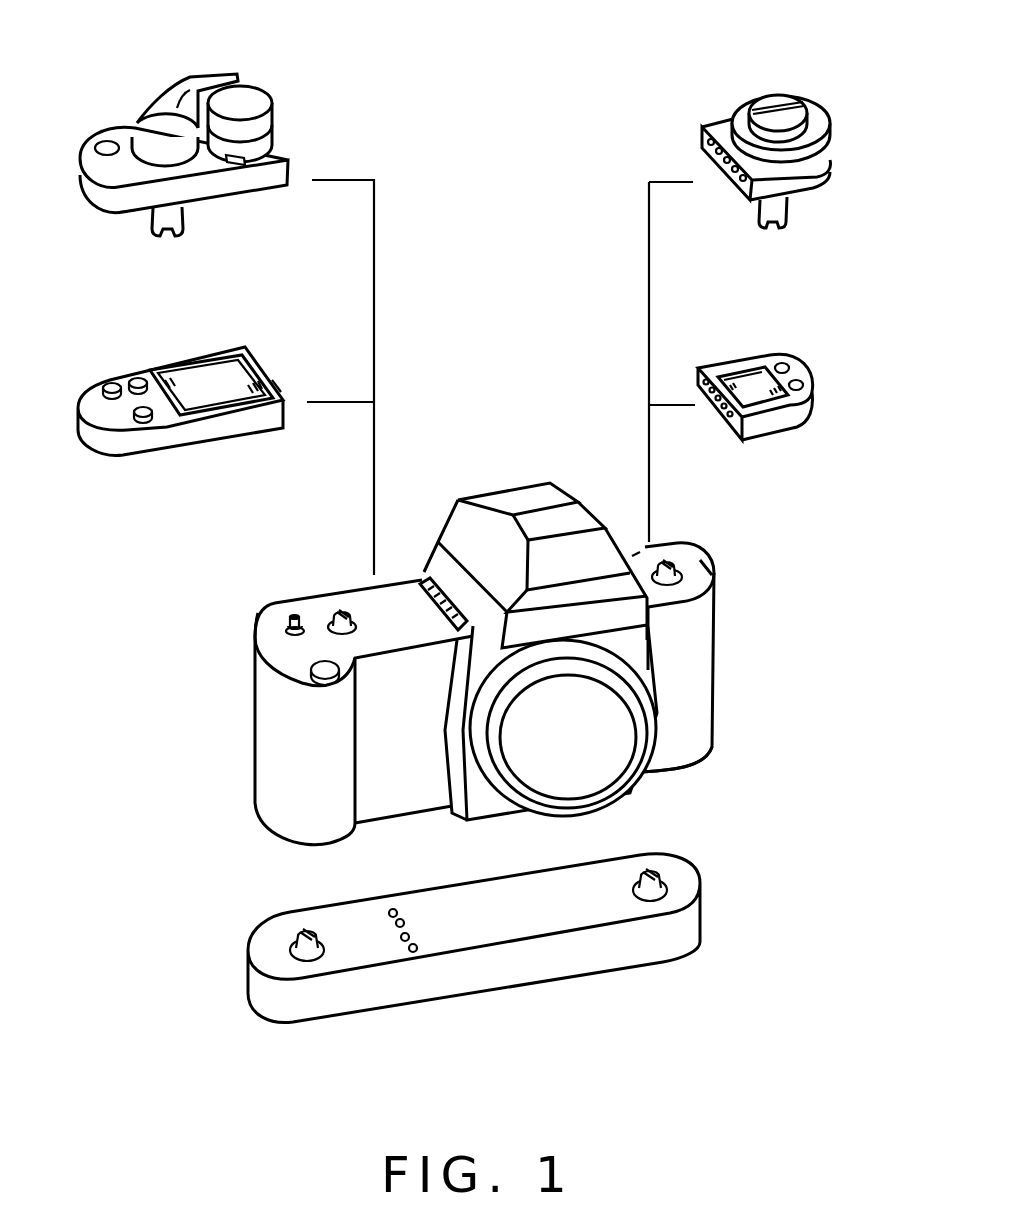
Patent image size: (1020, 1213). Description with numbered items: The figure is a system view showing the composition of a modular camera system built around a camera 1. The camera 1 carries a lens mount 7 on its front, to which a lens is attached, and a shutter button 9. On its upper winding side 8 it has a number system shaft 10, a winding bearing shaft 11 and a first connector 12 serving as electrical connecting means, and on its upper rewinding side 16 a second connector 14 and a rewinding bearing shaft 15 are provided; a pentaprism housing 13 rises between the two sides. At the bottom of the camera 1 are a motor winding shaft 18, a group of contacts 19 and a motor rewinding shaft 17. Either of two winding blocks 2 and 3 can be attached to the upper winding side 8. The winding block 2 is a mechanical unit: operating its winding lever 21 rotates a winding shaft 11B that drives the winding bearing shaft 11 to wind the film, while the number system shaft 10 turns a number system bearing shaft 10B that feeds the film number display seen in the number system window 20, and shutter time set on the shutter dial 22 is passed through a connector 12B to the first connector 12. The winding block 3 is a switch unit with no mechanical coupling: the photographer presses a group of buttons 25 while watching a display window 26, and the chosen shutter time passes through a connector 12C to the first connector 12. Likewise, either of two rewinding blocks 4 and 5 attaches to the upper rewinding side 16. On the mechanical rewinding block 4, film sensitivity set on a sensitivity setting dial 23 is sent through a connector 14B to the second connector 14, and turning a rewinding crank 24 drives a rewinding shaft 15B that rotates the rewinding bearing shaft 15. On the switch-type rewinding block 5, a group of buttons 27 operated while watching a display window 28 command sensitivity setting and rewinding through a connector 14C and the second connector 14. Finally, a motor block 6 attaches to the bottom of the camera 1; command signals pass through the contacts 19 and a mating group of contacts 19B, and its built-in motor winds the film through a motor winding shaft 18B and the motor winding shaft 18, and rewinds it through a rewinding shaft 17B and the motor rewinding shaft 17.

The camera 1 is at (492, 714).
The winding block 2 is at (102, 197).
The winding block 3 is at (115, 440).
The rewinding block 4 is at (825, 176).
The rewinding block 5 is at (807, 418).
The motor block 6 is at (255, 990).
The lens mount 7 is at (573, 765).
The upper winding side 8 is at (268, 640).
The shutter button 9 is at (320, 680).
The number system shaft 10 is at (295, 615).
The winding bearing shaft 11 is at (342, 605).
The first connector 12 is at (440, 570).
The pentaprism housing 13 is at (530, 492).
The second connector 14 is at (637, 553).
The rewinding bearing shaft 15 is at (662, 560).
The upper rewinding side 16 is at (720, 563).
The motor rewinding shaft 17 is at (673, 763).
The motor winding shaft 18 is at (290, 845).
The group of contacts 19 is at (398, 818).
The number system window 20 is at (105, 145).
The winding lever 21 is at (178, 110).
The shutter dial 22 is at (257, 105).
The sensitivity setting dial 23 is at (813, 130).
The rewinding crank 24 is at (783, 95).
The group of buttons 25 is at (143, 407).
The display window 26 is at (210, 367).
The group of buttons 27 is at (800, 380).
The display window 28 is at (740, 390).
The number system bearing shaft 10B is at (128, 217).
The winding shaft 11B is at (187, 217).
The connector 12B is at (280, 157).
The connector 12C is at (277, 383).
The connector 14B is at (702, 142).
The connector 14C is at (710, 412).
The rewinding shaft 15B is at (782, 213).
The rewinding shaft 17B is at (667, 885).
The motor winding shaft 18B is at (307, 938).
The group of contacts 19B is at (420, 940).